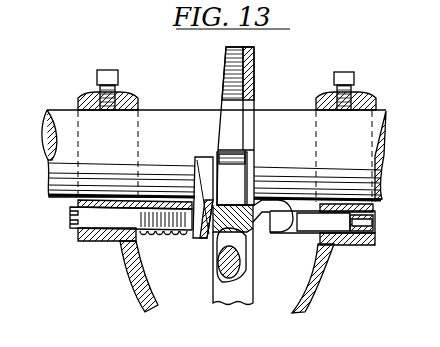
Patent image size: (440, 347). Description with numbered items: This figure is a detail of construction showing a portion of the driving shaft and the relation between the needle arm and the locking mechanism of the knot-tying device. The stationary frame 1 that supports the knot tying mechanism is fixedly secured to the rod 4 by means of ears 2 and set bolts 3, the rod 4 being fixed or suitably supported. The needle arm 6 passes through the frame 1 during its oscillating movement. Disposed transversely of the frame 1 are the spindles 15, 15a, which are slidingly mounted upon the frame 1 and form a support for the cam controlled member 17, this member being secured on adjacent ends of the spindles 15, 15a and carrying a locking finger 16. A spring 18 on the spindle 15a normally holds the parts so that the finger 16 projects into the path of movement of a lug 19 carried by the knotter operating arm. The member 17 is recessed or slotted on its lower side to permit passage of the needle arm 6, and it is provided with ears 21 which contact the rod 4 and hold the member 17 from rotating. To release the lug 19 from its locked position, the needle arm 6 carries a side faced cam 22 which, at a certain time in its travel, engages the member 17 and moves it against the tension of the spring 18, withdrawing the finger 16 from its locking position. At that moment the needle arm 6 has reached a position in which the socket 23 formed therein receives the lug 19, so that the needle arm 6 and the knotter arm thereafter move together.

The frame 1 is at (321, 275).
The ears 2 is at (129, 96).
The set bolts 3 is at (114, 70).
The rod 4 is at (214, 156).
The needle arm 6 is at (224, 68).
The spindle 15 is at (303, 233).
The spindle 15a is at (103, 222).
The locking finger 16 is at (223, 196).
The cam controlled member 17 is at (190, 200).
The spring 18 is at (163, 240).
The lug 19 is at (214, 269).
The ears 21 is at (244, 151).
The side faced cam 22 is at (220, 146).
The socket 23 is at (253, 240).